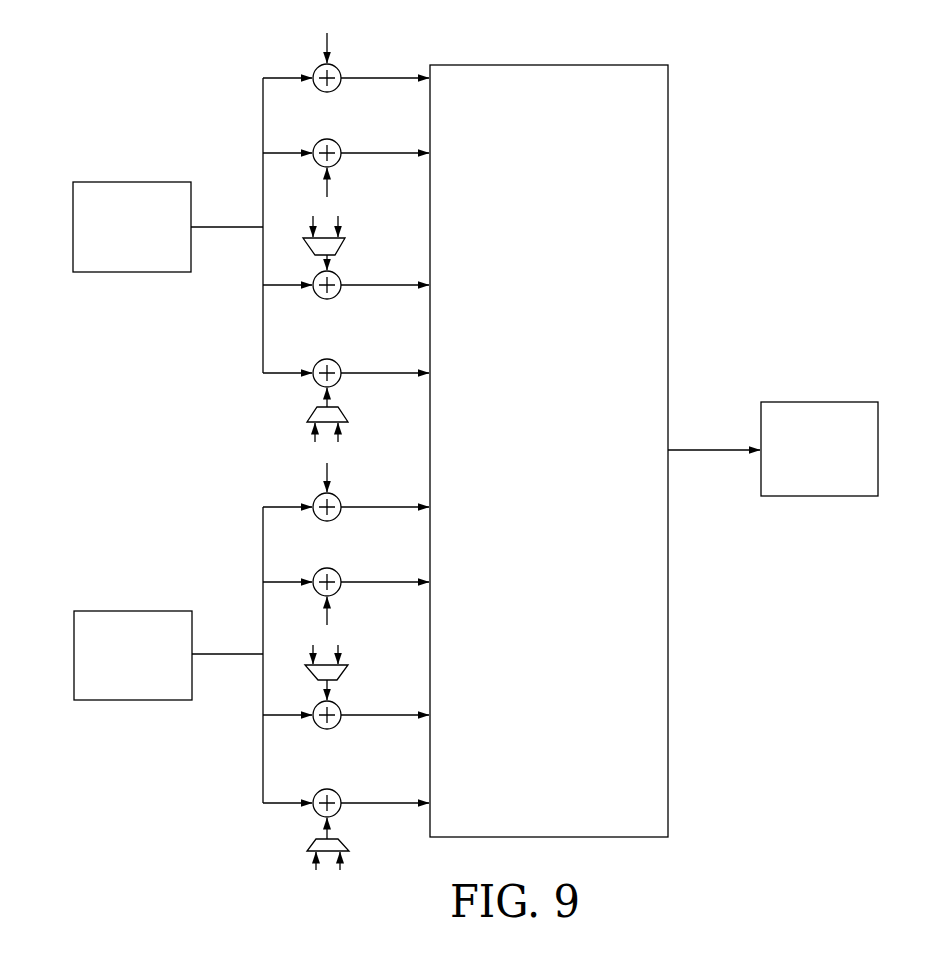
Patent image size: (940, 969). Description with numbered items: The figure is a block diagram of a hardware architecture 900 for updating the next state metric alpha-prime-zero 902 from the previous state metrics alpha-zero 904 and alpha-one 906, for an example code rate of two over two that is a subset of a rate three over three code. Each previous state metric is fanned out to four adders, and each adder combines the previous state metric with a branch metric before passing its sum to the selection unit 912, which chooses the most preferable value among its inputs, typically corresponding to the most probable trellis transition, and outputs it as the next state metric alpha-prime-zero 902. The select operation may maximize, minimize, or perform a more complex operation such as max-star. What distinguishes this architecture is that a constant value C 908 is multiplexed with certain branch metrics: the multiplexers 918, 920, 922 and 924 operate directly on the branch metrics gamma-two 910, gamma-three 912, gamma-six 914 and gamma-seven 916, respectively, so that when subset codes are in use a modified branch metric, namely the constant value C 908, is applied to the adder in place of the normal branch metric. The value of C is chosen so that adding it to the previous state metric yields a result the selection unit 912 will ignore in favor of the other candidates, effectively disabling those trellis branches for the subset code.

The hardware architecture 900 is at (724, 187).
The next state metric α'0 902 is at (821, 402).
The previous state metric α0 904 is at (132, 182).
The previous state metric α1 906 is at (133, 611).
The constant value C 908 is at (371, 549).
The branch metric γ2 910 is at (291, 216).
The branch metric γ3 / selection unit 912 is at (466, 451).
The branch metric γ6 914 is at (291, 644).
The branch metric γ7 916 is at (291, 868).
The multiplexer 918 is at (340, 253).
The multiplexer 920 is at (306, 412).
The multiplexer 922 is at (340, 679).
The multiplexer 924 is at (311, 843).